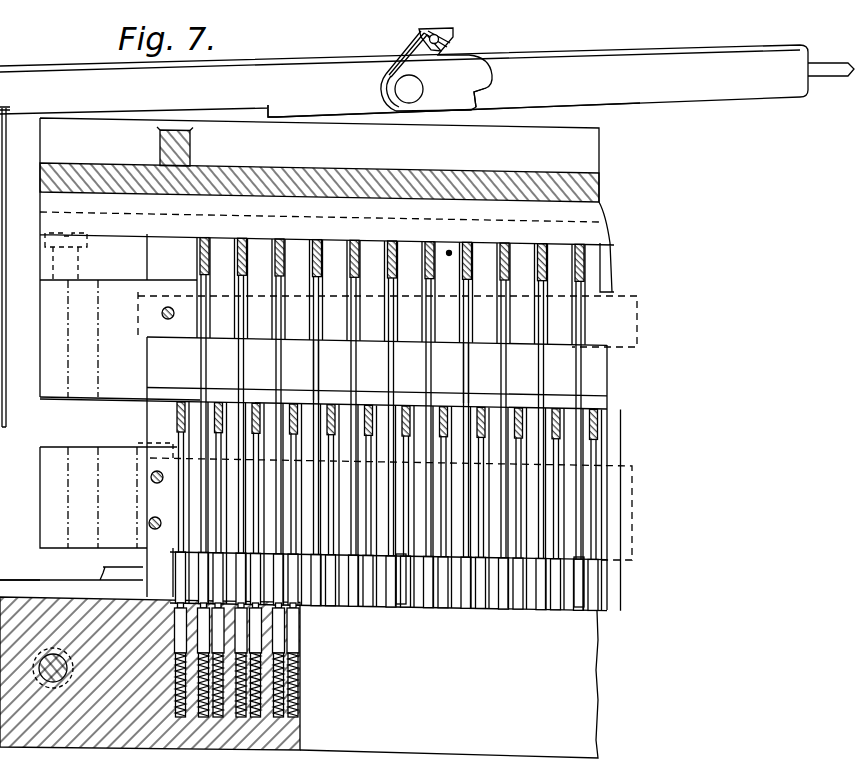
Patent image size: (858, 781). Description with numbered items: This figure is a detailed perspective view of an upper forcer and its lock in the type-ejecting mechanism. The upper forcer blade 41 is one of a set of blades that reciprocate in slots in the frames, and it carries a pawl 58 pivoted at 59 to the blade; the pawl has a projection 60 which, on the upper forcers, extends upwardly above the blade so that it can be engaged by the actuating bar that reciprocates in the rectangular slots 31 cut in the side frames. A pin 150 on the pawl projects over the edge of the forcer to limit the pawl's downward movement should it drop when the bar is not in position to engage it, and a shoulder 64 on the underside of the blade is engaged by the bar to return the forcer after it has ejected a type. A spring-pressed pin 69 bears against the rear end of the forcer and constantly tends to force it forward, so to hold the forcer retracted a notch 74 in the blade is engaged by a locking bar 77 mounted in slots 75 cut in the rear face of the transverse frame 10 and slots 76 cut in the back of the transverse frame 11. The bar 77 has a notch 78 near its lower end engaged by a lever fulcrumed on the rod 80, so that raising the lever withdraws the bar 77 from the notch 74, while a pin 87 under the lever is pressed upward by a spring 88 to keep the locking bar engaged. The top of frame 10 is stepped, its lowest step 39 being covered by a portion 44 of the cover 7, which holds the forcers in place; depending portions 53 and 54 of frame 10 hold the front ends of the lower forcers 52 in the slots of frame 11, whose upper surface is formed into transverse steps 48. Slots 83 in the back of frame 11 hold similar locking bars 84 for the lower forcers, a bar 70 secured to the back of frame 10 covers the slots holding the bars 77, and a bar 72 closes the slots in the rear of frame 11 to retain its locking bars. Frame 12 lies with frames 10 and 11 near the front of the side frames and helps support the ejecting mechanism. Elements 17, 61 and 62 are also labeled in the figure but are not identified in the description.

The cover 7 is at (598, 200).
The transverse frame 10 is at (596, 263).
The transverse frame 11 is at (597, 513).
The transverse frame 12 is at (393, 733).
The plate 17 is at (20, 550).
The rectangular slots 31 is at (257, 245).
The lowest step 39 is at (613, 96).
The upper forcer blades 41 is at (489, 240).
The cover portion 44 is at (612, 283).
The transverse step 48 is at (433, 407).
The lower forcer blades 52 is at (243, 400).
The depending portion 53 is at (613, 367).
The depending portion 54 is at (609, 440).
The pawl 58 is at (436, 73).
The pivot 59 is at (407, 106).
The projection 60 is at (455, 39).
The bar underside 61 is at (458, 117).
The hook 62 is at (491, 81).
The shoulder 64 is at (273, 112).
The pin 69 is at (840, 70).
The bar 70 is at (622, 328).
The bar 72 is at (640, 475).
The notch 74 is at (15, 251).
The slots 75 is at (383, 240).
The slots 76 is at (560, 425).
The locking bar 77 is at (319, 367).
The notch 78 is at (40, 389).
The rod 80 is at (600, 590).
The slots 83 is at (293, 462).
The locking bar 84 is at (572, 552).
The pin 87 is at (286, 645).
The spring 88 is at (286, 682).
The pin 150 is at (420, 36).